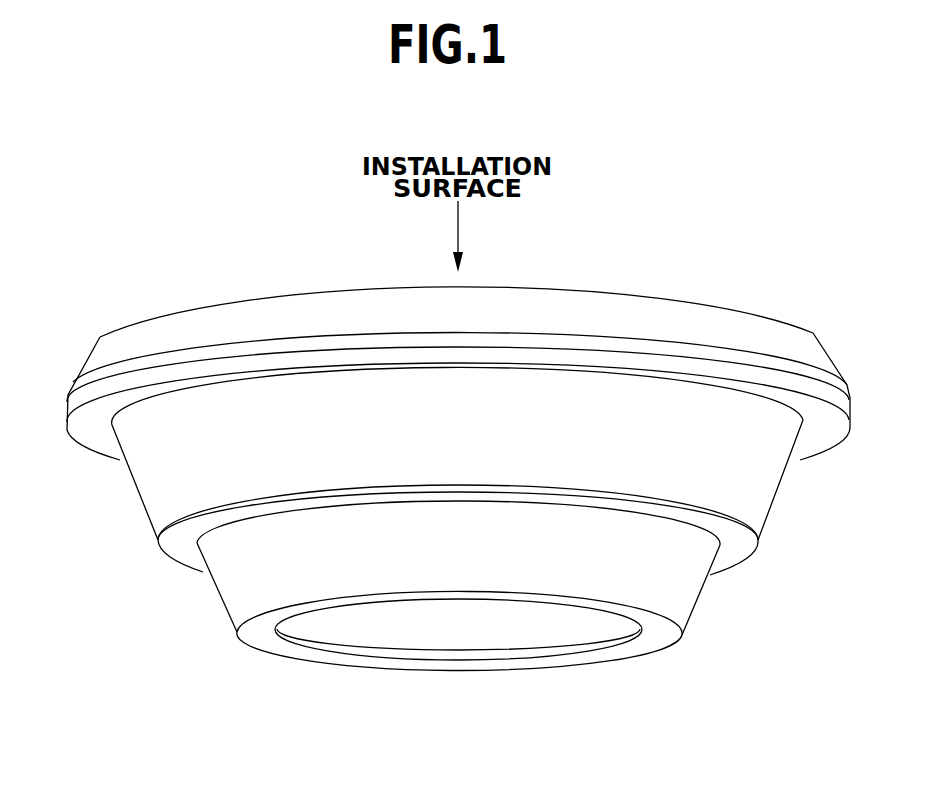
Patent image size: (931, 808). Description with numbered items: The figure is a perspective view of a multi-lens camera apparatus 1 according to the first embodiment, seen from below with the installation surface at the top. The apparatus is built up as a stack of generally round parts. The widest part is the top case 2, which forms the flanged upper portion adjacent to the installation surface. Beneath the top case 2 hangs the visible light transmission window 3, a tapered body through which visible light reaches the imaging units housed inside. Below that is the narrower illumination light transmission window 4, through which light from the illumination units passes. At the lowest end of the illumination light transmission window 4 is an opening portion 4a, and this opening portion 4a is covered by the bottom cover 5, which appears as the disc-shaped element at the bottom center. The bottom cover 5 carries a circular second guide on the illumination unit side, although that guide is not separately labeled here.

The multi-lens camera apparatus 1 is at (84, 311).
The top case 2 is at (752, 327).
The visible light transmission window 3 is at (773, 490).
The illumination light transmission window 4 is at (688, 592).
The opening portion 4a is at (632, 638).
The bottom cover 5 is at (500, 640).